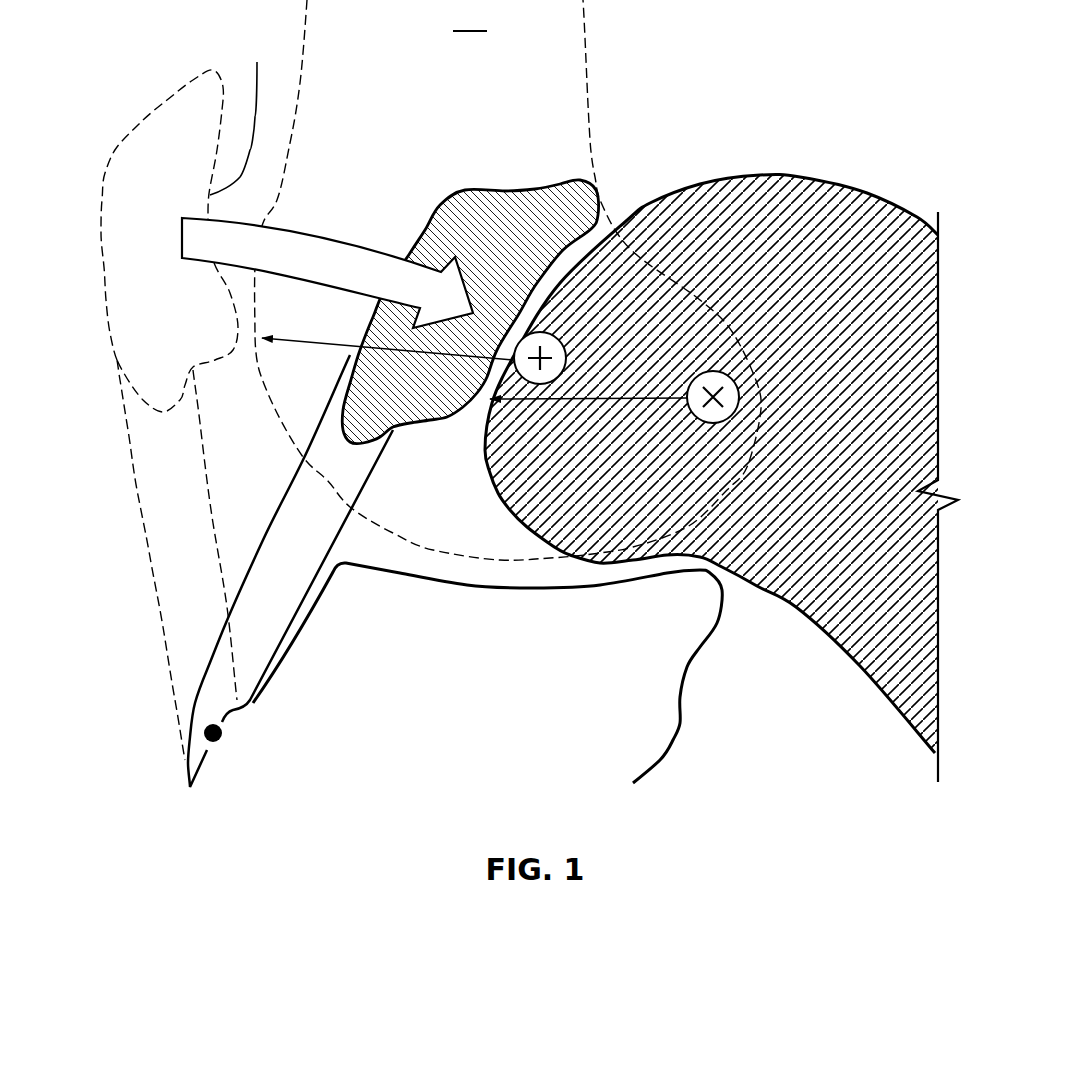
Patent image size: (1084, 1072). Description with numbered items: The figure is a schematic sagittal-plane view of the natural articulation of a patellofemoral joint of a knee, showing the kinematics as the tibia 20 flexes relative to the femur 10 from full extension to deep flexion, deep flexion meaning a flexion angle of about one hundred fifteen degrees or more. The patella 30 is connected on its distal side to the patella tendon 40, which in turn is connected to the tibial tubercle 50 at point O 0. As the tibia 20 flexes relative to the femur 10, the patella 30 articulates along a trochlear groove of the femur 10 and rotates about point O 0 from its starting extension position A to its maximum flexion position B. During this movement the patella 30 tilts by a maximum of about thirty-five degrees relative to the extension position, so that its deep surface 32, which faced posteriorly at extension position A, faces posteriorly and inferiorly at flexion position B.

The femur 10 is at (827, 188).
The tibia 20 is at (450, 753).
The patella 30 is at (117, 213).
The deep surface 32 is at (242, 113).
The patella tendon 40 is at (150, 483).
The tibial tubercle 50 is at (188, 777).
The point O 0 is at (224, 743).